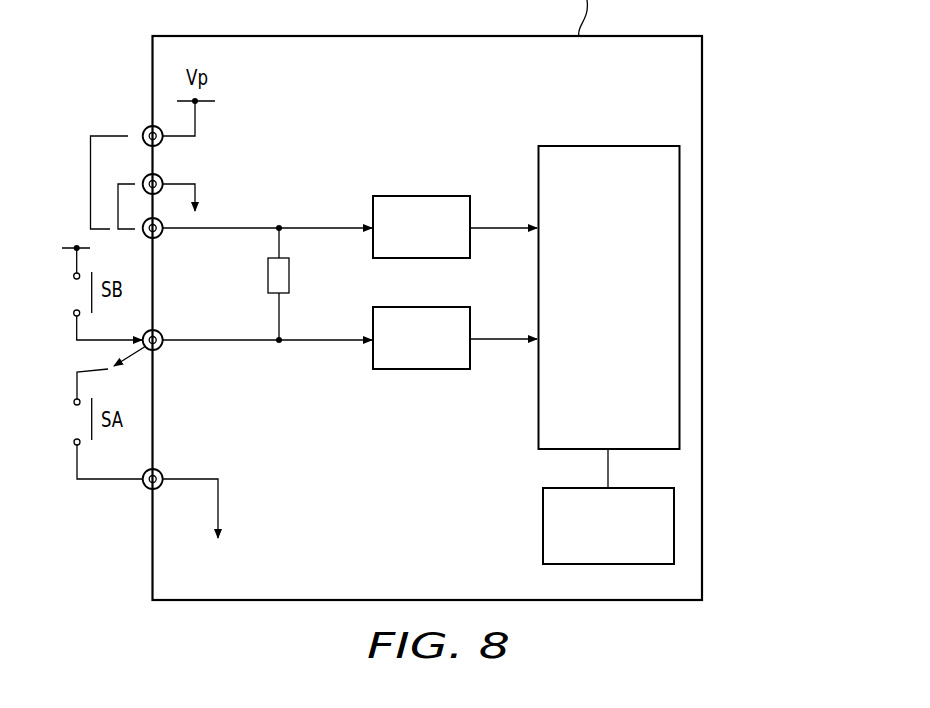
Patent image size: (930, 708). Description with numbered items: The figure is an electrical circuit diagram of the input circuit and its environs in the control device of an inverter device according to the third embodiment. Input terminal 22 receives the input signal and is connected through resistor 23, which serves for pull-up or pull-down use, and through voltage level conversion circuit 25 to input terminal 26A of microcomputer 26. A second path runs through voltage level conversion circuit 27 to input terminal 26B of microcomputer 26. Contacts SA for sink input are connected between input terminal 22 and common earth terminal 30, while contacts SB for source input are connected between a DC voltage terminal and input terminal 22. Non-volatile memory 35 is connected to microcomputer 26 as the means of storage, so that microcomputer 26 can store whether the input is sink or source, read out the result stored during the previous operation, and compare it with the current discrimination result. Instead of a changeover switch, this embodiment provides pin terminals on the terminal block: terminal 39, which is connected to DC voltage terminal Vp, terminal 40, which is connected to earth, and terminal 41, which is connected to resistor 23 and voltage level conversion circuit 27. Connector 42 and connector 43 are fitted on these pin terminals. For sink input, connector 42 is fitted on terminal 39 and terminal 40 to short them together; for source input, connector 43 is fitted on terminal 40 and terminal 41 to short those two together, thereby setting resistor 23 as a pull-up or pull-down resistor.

The input terminal 22 is at (161, 350).
The resistor 23 is at (289, 274).
The voltage level conversion circuit 25 is at (438, 373).
The microcomputer 26 is at (608, 143).
The input terminal of microcomputer 26A is at (535, 343).
The input terminal of microcomputer 26B is at (537, 220).
The voltage level conversion circuit 27 is at (420, 193).
The common earth terminal 30 is at (145, 488).
The non-volatile memory 35 is at (543, 527).
The terminal 39 is at (144, 129).
The terminal 40 is at (161, 178).
The terminal 41 is at (161, 237).
The connector 42 is at (90, 148).
The connector 43 is at (118, 212).